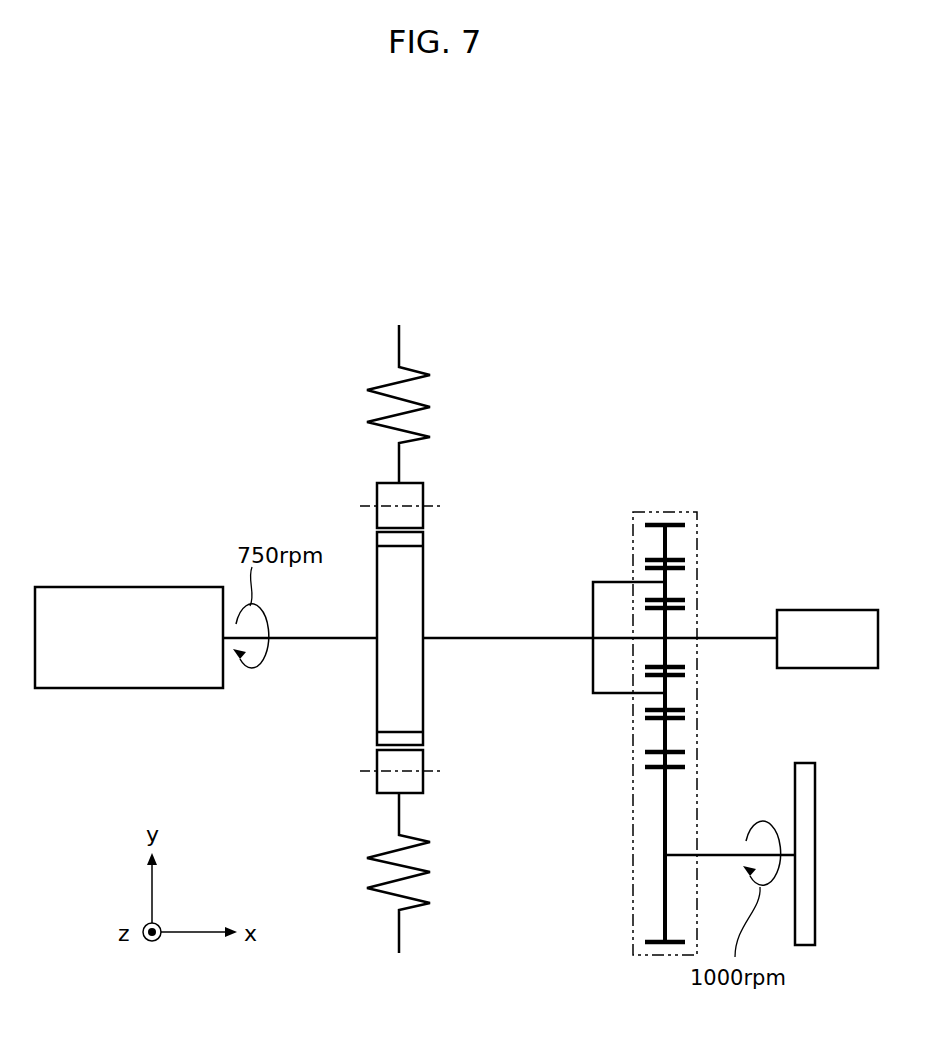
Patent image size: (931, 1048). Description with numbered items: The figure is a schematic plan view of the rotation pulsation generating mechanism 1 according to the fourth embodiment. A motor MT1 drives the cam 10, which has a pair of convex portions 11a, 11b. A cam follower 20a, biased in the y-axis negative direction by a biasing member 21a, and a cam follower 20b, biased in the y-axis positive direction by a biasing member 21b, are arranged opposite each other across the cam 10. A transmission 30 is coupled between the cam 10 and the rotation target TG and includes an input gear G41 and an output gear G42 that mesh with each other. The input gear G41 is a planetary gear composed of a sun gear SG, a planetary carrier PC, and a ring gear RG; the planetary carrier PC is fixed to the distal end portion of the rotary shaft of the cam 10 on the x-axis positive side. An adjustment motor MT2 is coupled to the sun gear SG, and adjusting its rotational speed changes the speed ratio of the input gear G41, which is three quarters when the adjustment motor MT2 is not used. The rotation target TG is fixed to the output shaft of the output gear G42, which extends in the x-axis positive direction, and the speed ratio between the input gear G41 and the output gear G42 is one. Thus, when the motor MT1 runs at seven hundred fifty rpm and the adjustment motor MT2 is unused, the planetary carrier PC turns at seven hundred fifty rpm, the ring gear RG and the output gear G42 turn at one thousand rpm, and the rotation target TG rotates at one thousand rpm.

The rotation pulsation generating mechanism 1 is at (610, 466).
The cam 10 is at (420, 612).
The convex portion 11a is at (420, 540).
The convex portion 11b is at (420, 733).
The cam follower 20a is at (420, 494).
The cam follower 20b is at (420, 784).
The biasing member 21a is at (420, 397).
The biasing member 21b is at (420, 897).
The transmission 30 is at (696, 729).
The sun gear SG is at (665, 652).
The planetary carrier PC is at (665, 693).
The ring gear RG is at (698, 735).
The input gear G41 is at (731, 700).
The output gear G42 is at (660, 887).
The motor MT1 is at (129, 637).
The adjustment motor MT2 is at (827, 639).
The rotation target TG is at (807, 945).